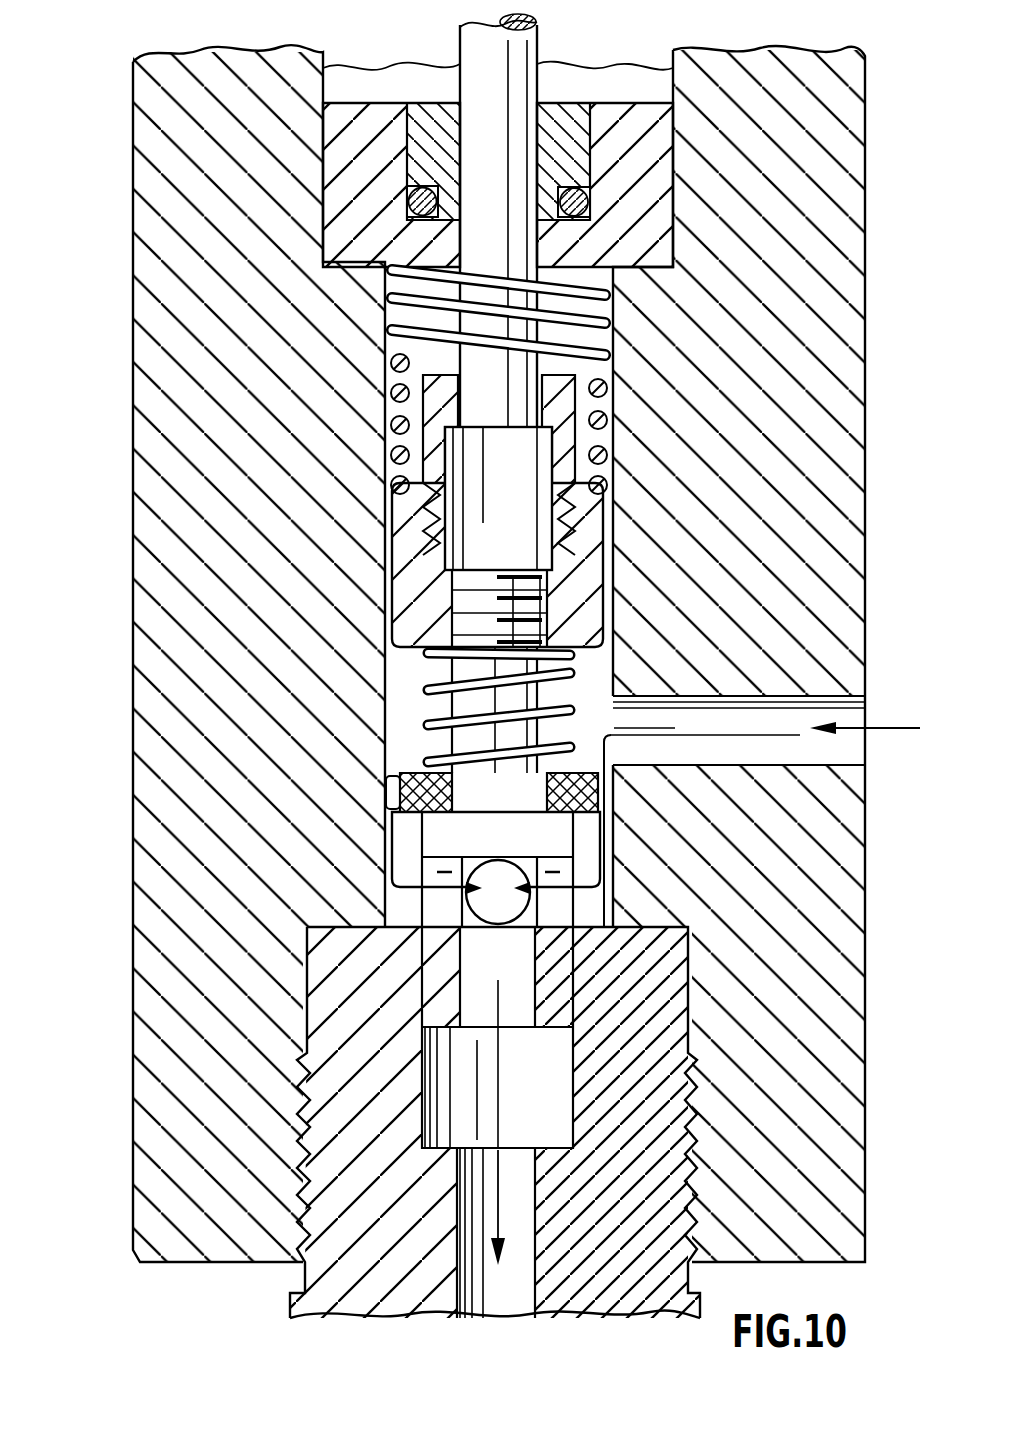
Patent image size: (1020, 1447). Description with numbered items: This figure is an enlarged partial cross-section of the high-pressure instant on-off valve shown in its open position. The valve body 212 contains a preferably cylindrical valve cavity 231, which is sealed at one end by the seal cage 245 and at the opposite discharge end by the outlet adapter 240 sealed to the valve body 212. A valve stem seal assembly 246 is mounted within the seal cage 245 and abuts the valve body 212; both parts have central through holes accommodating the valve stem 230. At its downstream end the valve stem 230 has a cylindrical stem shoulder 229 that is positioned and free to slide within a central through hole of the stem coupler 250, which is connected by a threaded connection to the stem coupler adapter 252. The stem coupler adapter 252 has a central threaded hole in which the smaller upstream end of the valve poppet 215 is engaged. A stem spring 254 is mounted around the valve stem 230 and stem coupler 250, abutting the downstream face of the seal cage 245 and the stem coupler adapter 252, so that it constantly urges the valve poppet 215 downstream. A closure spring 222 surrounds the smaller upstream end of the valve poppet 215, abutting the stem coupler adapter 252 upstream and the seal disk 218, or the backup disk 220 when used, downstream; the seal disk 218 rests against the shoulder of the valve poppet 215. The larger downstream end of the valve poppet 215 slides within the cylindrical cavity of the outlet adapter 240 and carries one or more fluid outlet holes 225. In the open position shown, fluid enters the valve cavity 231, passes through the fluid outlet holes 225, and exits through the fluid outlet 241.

The valve body 212 is at (152, 392).
The valve poppet 215 is at (575, 838).
The seal disk 218 is at (395, 822).
The backup disk 220 is at (395, 780).
The closure spring 222 is at (430, 690).
The fluid outlet holes 225 is at (560, 912).
The stem shoulder 229 is at (540, 455).
The valve stem 230 is at (520, 47).
The valve cavity 231 is at (605, 667).
The outlet adapter 240 is at (306, 1115).
The fluid outlet 241 is at (535, 1305).
The seal cage 245 is at (332, 214).
The valve stem seal assembly 246 is at (430, 122).
The stem coupler 250 is at (613, 408).
The stem coupler adapter 252 is at (600, 548).
The stem spring 254 is at (612, 325).